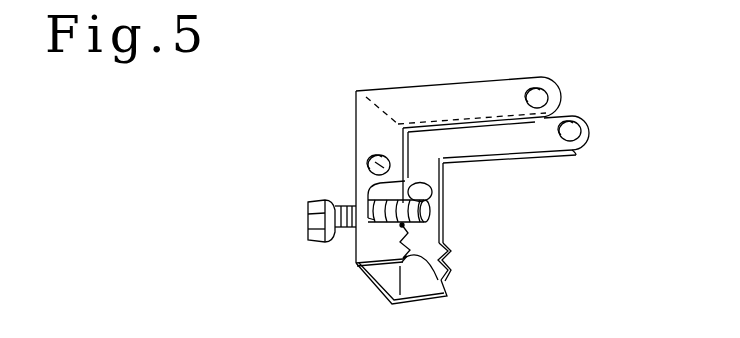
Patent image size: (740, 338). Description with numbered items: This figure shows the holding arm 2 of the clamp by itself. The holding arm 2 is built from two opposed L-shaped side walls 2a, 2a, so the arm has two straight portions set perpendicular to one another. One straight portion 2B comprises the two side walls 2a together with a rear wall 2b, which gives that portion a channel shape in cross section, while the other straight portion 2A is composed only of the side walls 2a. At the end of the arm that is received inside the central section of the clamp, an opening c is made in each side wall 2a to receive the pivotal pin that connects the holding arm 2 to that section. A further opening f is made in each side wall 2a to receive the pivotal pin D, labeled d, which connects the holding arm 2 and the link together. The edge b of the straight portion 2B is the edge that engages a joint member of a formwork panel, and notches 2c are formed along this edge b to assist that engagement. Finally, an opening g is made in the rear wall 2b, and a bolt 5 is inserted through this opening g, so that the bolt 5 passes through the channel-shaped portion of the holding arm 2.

The holding arm 2 is at (377, 82).
The other straight portion 2A is at (437, 91).
The one straight portion 2B is at (356, 129).
The side walls 2a is at (480, 110).
The rear wall 2b is at (382, 275).
The notches 2c is at (442, 282).
The bolt 5 is at (308, 218).
The edge b is at (443, 214).
The opening c is at (548, 101).
The pivotal pin d is at (411, 152).
The opening f is at (368, 160).
The opening g is at (370, 193).